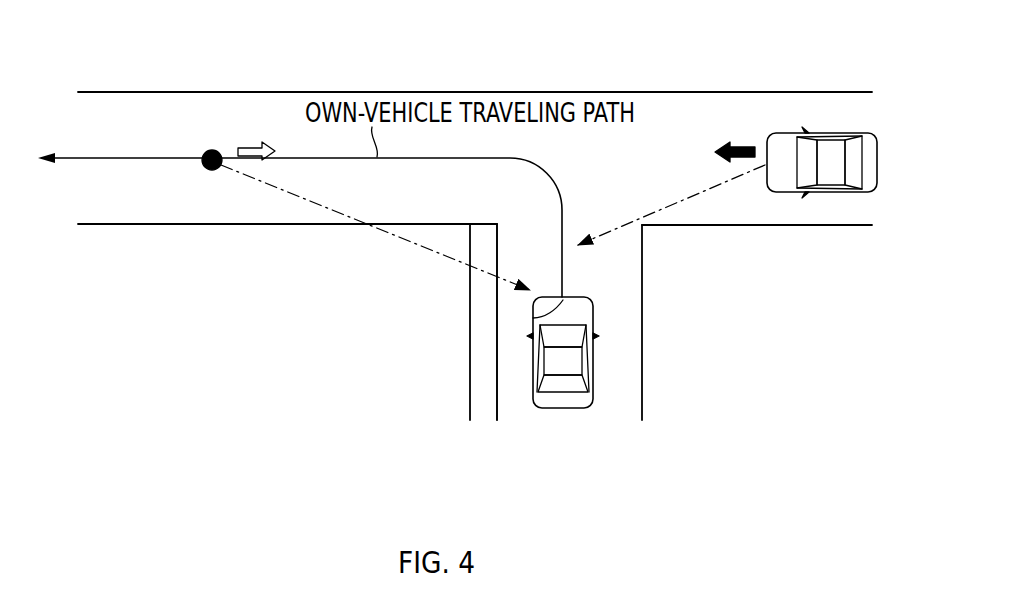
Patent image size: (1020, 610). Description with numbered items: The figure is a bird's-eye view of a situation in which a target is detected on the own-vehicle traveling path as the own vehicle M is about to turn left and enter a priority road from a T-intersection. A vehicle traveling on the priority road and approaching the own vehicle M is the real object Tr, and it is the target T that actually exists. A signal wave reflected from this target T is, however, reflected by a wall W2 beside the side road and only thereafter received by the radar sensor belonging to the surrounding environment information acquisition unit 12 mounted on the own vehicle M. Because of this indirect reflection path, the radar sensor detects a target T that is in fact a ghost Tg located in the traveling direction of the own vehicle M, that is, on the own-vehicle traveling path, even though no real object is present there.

The surrounding environment information acquisition unit 12 is at (533, 318).
The own vehicle M is at (508, 382).
The wall W2 is at (500, 373).
The target T is at (543, 148).
The ghost Tg is at (221, 152).
The real object Tr is at (820, 133).